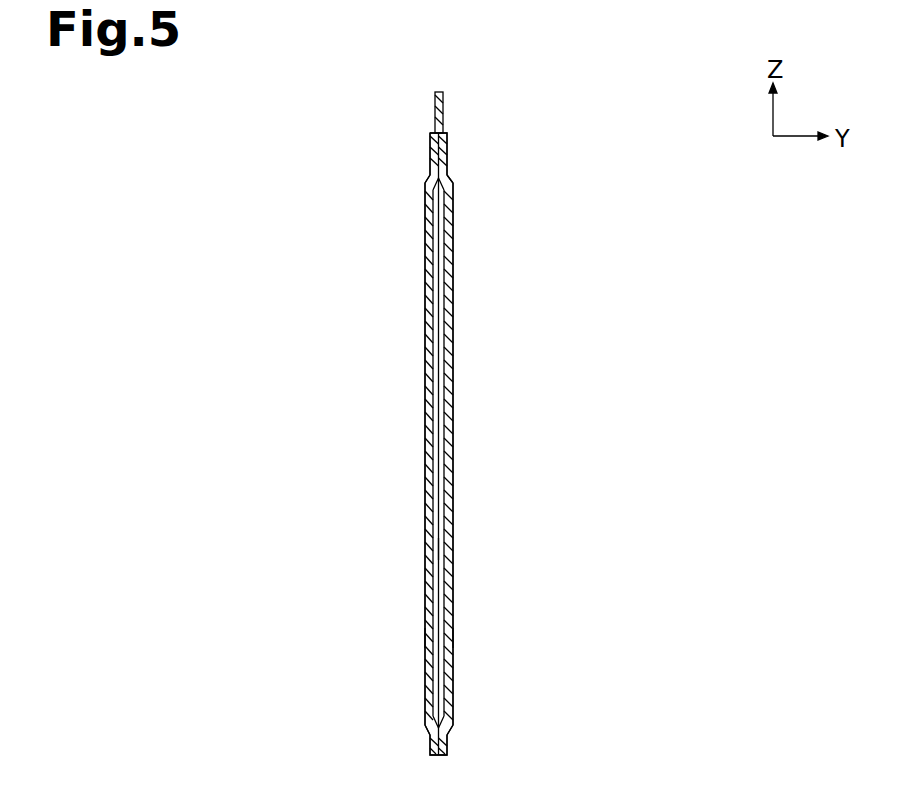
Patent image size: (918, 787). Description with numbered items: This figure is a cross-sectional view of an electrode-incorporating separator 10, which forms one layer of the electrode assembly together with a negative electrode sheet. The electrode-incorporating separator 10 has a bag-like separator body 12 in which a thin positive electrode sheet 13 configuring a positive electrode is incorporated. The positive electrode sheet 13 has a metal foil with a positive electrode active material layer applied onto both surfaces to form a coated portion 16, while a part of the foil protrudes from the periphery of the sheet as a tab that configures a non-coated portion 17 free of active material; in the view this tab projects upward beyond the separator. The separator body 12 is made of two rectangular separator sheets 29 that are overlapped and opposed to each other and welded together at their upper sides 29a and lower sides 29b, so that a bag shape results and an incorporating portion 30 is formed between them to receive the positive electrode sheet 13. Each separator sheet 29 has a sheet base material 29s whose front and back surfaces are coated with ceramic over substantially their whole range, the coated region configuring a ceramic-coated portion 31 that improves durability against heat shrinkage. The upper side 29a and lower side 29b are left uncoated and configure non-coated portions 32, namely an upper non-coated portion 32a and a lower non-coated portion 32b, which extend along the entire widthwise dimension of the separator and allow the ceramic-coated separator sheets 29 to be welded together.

The electrode-incorporating separator 10 is at (323, 80).
The separator body 12 is at (453, 230).
The positive electrode sheet 13 is at (440, 268).
The coated portion 16 is at (451, 372).
The non-coated portion 17 is at (446, 98).
The separator sheet 29 is at (425, 318).
The upper side 29a is at (470, 160).
The lower side 29b is at (470, 733).
The sheet base material 29s is at (470, 475).
The incorporating portion 30 is at (439, 550).
The ceramic-coated portion 31 is at (425, 636).
The non-coated portion 32 is at (442, 446).
The upper non-coated portion 32a is at (471, 130).
The lower non-coated portion 32b is at (475, 758).